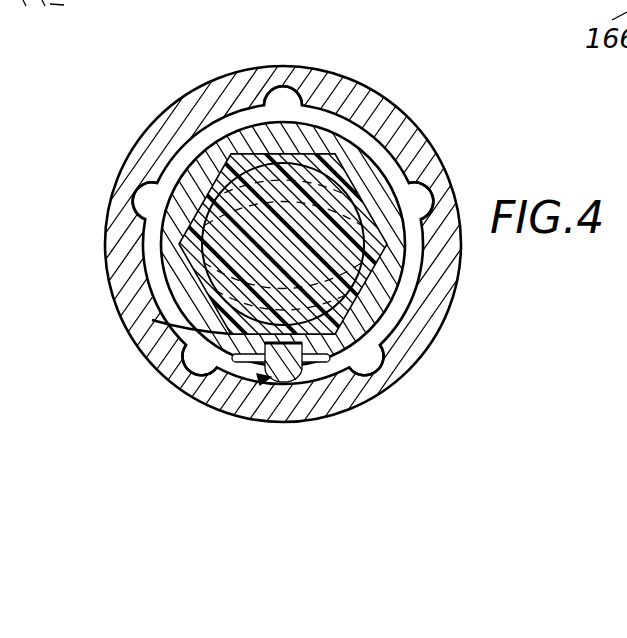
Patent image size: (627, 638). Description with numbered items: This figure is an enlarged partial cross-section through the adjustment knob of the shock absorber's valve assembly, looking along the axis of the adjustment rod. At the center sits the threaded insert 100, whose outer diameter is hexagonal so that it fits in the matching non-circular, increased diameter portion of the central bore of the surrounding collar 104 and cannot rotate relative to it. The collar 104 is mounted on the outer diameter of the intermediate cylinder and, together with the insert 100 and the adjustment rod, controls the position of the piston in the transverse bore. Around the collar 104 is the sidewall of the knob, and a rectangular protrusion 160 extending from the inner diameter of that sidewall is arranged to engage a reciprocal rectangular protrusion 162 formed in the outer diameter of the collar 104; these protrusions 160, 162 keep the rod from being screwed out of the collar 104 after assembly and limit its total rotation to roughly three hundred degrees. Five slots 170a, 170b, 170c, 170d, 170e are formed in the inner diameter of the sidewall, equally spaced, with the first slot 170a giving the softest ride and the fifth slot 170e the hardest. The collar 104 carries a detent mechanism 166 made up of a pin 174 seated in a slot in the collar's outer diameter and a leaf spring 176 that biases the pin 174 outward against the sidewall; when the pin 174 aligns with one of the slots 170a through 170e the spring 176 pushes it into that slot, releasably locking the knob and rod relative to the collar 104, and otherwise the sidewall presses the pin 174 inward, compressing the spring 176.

The threaded insert 100 is at (355, 262).
The collar 104 is at (370, 298).
The rectangular protrusion 160 is at (268, 246).
The rectangular protrusion 162 is at (227, 368).
The detent mechanism 166 is at (262, 382).
The first slot 170a is at (297, 74).
The second slot 170b is at (421, 197).
The third slot 170c is at (372, 358).
The fourth slot 170d is at (186, 362).
The fifth slot 170e is at (137, 212).
The pin 174 is at (357, 402).
The spring 176 is at (265, 344).